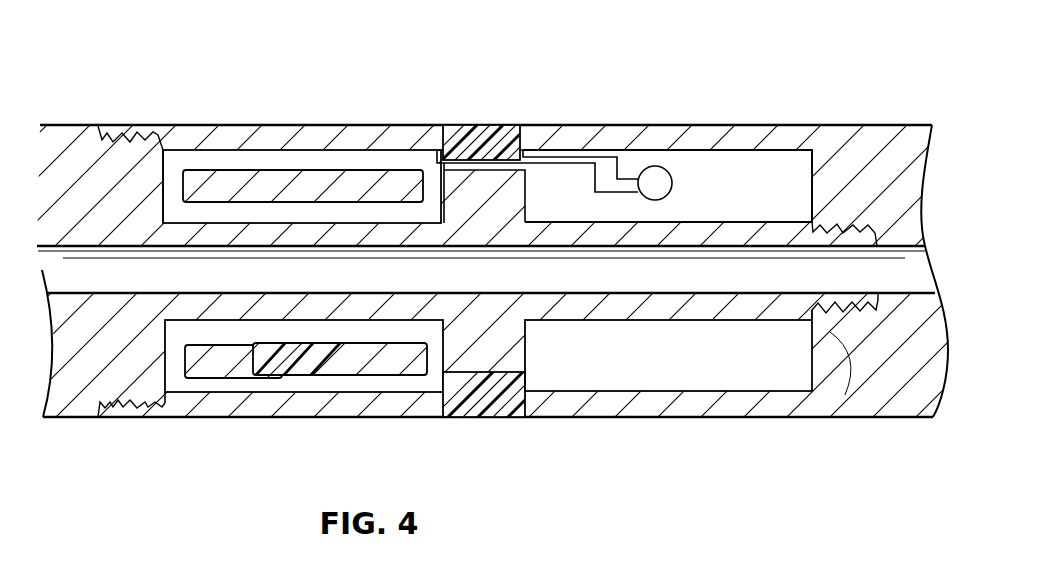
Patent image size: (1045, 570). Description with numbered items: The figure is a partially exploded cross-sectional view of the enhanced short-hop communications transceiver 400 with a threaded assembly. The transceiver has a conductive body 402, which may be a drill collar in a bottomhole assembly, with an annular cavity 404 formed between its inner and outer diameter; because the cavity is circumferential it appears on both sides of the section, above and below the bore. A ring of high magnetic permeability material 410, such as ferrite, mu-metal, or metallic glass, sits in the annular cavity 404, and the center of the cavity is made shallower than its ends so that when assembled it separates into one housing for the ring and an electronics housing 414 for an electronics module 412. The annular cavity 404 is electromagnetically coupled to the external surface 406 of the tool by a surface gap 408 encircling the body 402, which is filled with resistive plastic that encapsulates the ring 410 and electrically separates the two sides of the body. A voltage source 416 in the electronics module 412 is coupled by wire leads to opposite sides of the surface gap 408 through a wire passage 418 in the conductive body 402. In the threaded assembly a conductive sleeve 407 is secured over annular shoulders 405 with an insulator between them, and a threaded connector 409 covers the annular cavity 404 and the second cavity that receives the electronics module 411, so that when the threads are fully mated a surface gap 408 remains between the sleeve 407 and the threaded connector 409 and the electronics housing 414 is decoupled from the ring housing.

The short-hop transceiver 400 is at (412, 65).
The conductive body 402 is at (73, 153).
The annular cavity 404 is at (215, 165).
The annular shoulders 405 is at (100, 418).
The external surface 406 is at (851, 125).
The conductive sleeve 407 is at (287, 400).
The surface gap 408 is at (473, 396).
The threaded connector 409 is at (842, 332).
The high magnetic permeability material 410 is at (298, 171).
The electronics module 411 is at (798, 176).
The electronics module 412 is at (648, 105).
The electronics housing 414 is at (711, 372).
The voltage source 416 is at (673, 182).
The wire passage 418 is at (508, 126).